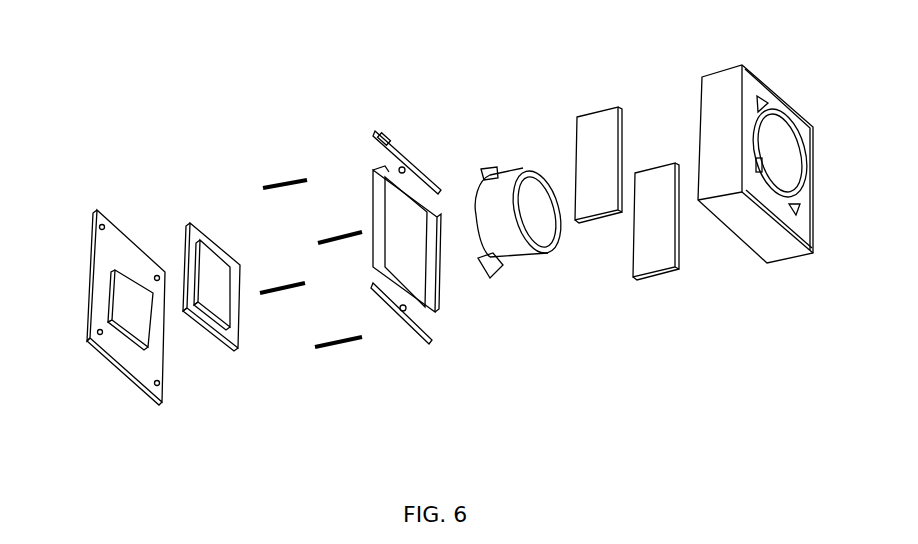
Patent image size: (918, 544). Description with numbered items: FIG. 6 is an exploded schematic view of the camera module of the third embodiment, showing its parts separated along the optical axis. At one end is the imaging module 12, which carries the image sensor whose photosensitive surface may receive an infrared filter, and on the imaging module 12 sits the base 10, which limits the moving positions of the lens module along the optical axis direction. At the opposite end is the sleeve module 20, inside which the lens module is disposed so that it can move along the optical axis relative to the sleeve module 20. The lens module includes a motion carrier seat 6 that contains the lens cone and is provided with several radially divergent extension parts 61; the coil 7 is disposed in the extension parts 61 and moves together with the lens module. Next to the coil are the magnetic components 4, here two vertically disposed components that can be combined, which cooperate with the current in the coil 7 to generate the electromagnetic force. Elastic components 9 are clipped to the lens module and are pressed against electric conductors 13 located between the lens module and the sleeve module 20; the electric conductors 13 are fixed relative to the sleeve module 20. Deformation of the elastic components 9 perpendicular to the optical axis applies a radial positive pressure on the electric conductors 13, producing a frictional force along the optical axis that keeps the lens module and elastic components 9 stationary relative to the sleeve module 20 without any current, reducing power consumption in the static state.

The imaging module 12 is at (92, 243).
The base 10 is at (187, 237).
The electric conductors 13 is at (293, 180).
The elastic components 9 is at (380, 143).
The coil 7 is at (432, 283).
The motion carrier seat 6 is at (512, 180).
The extension parts 61 is at (493, 260).
The magnetic component 4 is at (588, 152).
The sleeve module 20 is at (770, 90).